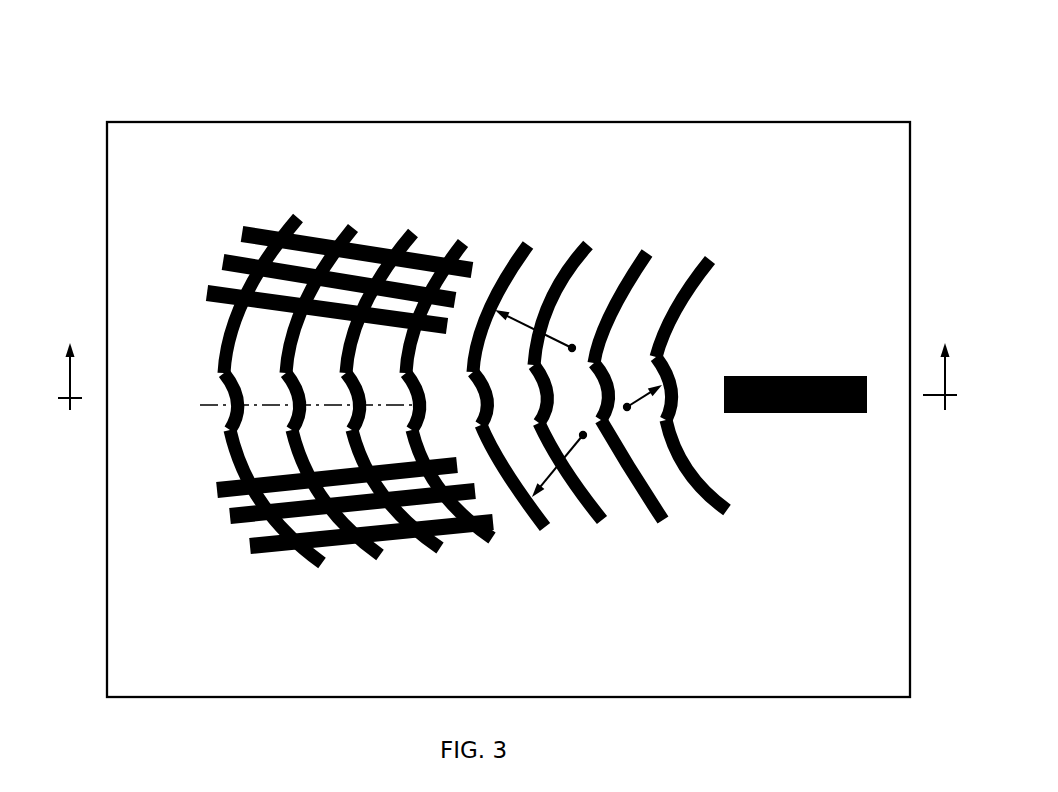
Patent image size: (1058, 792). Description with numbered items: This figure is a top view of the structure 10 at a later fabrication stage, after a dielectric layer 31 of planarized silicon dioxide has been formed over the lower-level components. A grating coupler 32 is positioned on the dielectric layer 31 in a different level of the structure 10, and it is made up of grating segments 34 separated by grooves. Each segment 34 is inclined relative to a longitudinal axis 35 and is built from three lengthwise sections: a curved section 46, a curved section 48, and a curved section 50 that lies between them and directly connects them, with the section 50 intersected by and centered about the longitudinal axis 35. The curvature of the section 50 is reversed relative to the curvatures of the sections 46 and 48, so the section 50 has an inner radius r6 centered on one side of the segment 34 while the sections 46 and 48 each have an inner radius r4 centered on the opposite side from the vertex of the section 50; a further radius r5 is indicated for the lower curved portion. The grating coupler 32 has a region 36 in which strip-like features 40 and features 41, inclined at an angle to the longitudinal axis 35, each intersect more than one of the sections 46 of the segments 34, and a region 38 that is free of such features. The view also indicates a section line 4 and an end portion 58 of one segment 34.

The structure 10 is at (145, 106).
The dielectric layer 31 is at (892, 625).
The grating coupler 32 is at (154, 187).
The segments 34 is at (304, 582).
The longitudinal axis 35 is at (271, 405).
The region 36 is at (458, 75).
The region 38 is at (702, 102).
The features 40 is at (430, 253).
The features 41 is at (340, 553).
The section 46 is at (298, 218).
The section 48 is at (380, 557).
The section 50 is at (612, 372).
The end portion of curved member 58 is at (665, 520).
The section line 4- 4 is at (507, 360).
The inner radius r4 is at (535, 331).
The radius r5 is at (552, 465).
The inner radius r6 is at (641, 390).